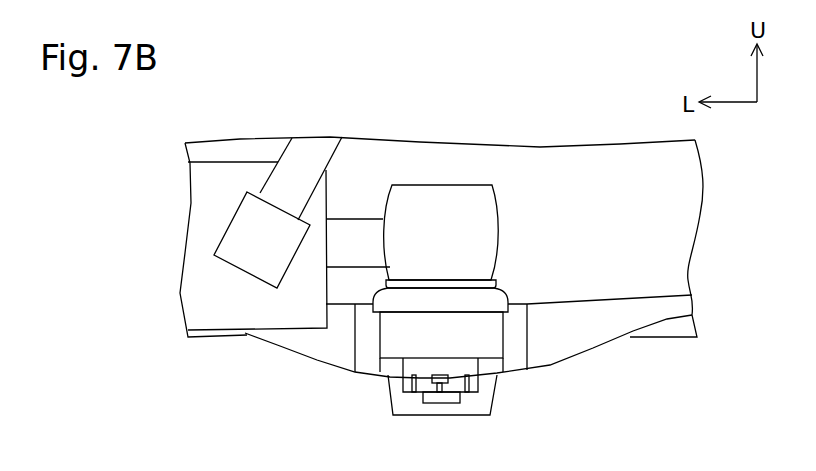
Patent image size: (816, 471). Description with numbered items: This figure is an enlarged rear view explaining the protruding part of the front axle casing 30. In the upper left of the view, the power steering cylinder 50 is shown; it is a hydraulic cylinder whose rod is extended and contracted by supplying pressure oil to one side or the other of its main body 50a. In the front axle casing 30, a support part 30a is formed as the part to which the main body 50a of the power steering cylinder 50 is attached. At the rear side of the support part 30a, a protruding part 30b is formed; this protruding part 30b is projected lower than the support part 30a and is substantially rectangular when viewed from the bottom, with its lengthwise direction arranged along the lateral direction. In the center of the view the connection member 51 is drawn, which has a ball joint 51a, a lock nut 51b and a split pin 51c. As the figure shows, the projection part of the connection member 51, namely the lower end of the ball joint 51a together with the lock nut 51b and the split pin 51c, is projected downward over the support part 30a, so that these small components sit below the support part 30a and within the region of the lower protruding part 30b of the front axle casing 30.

The front axle casing 30 is at (658, 337).
The support part 30a is at (388, 342).
The protruding part 30b is at (407, 407).
The power steering cylinder 50 is at (242, 160).
The main body 50a is at (282, 320).
The connection member 51 is at (640, 382).
The ball joint 51a is at (475, 246).
The lock nut 51b is at (448, 380).
The split pin 51c is at (468, 368).